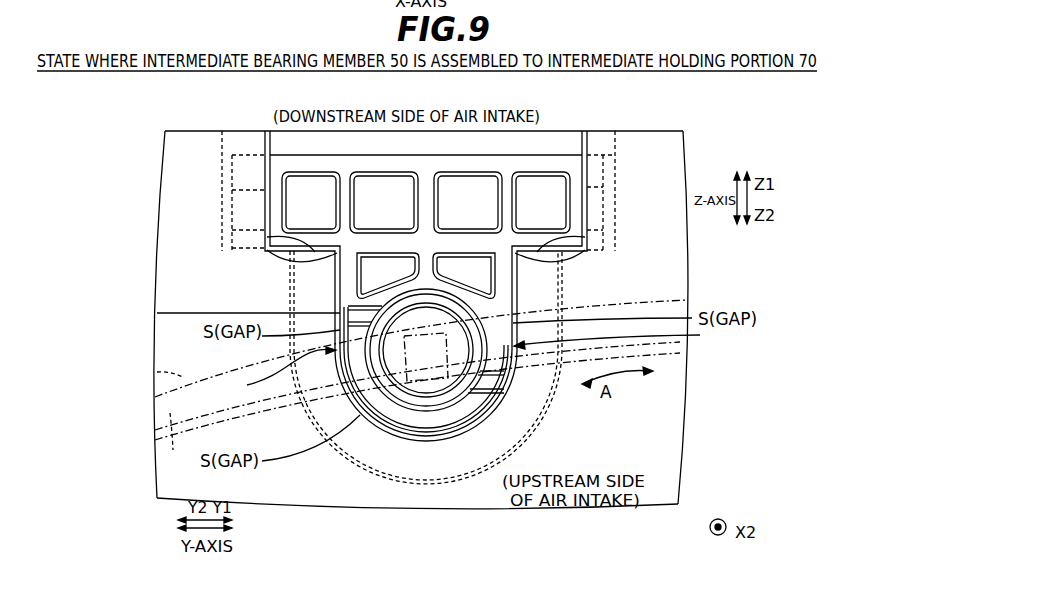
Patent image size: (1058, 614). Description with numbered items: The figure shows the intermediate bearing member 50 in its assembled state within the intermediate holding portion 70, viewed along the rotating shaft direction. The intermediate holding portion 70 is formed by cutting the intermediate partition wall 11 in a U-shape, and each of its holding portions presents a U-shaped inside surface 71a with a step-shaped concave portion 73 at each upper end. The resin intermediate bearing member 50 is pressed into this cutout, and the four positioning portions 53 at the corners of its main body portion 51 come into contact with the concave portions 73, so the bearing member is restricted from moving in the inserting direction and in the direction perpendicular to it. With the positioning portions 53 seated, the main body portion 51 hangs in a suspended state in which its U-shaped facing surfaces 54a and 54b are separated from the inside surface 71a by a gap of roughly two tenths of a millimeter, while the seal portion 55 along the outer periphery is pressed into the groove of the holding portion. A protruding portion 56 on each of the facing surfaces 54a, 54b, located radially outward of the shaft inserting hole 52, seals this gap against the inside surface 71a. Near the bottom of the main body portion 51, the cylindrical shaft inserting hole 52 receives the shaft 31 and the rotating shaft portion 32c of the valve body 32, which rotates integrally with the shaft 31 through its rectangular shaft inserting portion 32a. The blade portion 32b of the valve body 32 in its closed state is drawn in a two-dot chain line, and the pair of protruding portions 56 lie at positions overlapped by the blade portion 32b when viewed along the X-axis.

The intermediate partition wall 11 is at (203, 147).
The intermediate holding portion 70 is at (270, 130).
The main body portion 51 is at (543, 135).
The intermediate bearing member 50 is at (585, 118).
The concave portion 73 is at (262, 235).
The positioning portion 53 is at (313, 262).
The facing surface 54b is at (333, 300).
The facing surface 54a is at (517, 300).
The inside surface 71a is at (157, 313).
The protruding portion 56 is at (484, 361).
The seal portion 55 is at (520, 392).
The shaft inserting hole 52 is at (455, 390).
The valve body 32 is at (423, 353).
The blade portion 32b is at (163, 373).
The shaft inserting portion 32a is at (445, 388).
The rotating shaft portion 32c is at (425, 372).
The shaft 31 is at (415, 395).